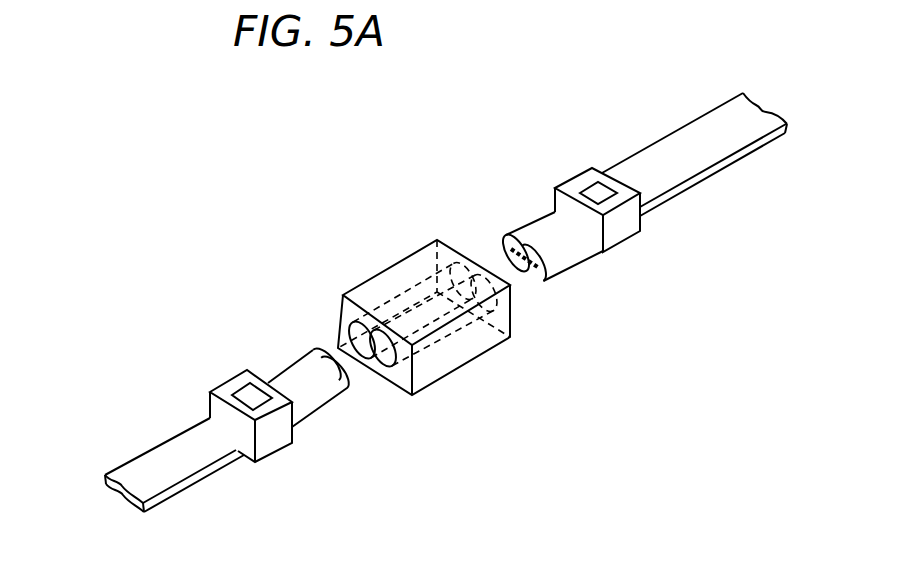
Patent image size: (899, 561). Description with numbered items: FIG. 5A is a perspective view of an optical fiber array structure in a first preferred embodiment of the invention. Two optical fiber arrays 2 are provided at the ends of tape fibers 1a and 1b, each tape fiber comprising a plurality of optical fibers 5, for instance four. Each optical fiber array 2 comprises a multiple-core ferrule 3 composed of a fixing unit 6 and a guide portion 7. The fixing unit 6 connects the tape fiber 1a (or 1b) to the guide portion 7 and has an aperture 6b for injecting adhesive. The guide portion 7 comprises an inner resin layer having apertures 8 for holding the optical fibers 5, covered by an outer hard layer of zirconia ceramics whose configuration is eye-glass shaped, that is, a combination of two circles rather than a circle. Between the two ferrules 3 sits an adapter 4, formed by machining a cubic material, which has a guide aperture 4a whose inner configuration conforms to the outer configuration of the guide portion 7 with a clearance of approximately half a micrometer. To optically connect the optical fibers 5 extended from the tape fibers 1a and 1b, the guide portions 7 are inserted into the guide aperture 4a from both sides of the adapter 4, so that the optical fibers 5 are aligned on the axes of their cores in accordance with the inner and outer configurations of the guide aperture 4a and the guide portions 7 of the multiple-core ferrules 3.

The tape fiber 1a is at (663, 148).
The tape fiber 1b is at (144, 467).
The optical fiber array 2 is at (423, 132).
The multiple-core ferrule 3 is at (367, 470).
The adapter 4 is at (389, 263).
The guide aperture 4a is at (358, 318).
The optical fiber 5 is at (535, 272).
The fixing unit 6 is at (283, 433).
The adhesive injecting aperture 6b is at (692, 222).
The guide portion 7 is at (323, 395).
The aperture 8 is at (503, 247).